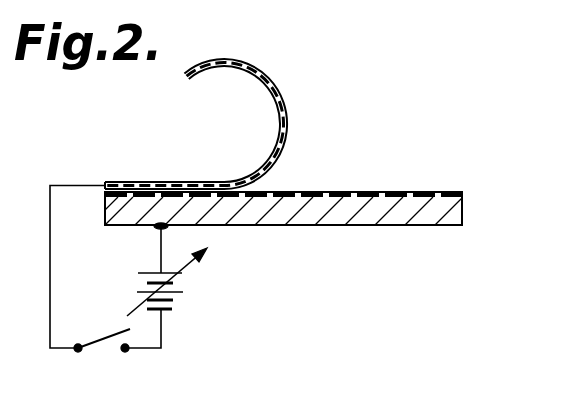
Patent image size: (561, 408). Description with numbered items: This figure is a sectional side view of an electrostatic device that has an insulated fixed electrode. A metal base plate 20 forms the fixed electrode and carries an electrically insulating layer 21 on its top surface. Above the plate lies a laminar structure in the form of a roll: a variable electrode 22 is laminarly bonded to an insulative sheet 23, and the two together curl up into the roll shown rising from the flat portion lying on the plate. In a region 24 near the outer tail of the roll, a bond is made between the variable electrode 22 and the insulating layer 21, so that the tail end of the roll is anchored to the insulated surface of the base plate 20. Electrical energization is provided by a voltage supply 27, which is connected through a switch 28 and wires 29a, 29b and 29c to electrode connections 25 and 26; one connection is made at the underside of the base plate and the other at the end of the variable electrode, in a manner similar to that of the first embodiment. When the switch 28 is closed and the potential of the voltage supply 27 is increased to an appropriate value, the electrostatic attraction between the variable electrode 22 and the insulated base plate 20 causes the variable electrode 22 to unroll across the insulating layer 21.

The metal base plate 20 is at (376, 210).
The electrically insulating layer 21 is at (394, 192).
The variable electrode 22 is at (266, 78).
The insulative sheet 23 is at (248, 77).
The region near the outer tail of the roll 24 is at (143, 189).
The electrode connection 25 is at (166, 228).
The electrode connection 26 is at (101, 183).
The voltage supply 27 is at (185, 288).
The switch 28 is at (100, 341).
The wire 29a is at (68, 185).
The wire 29b is at (160, 254).
The wire 29c is at (163, 331).